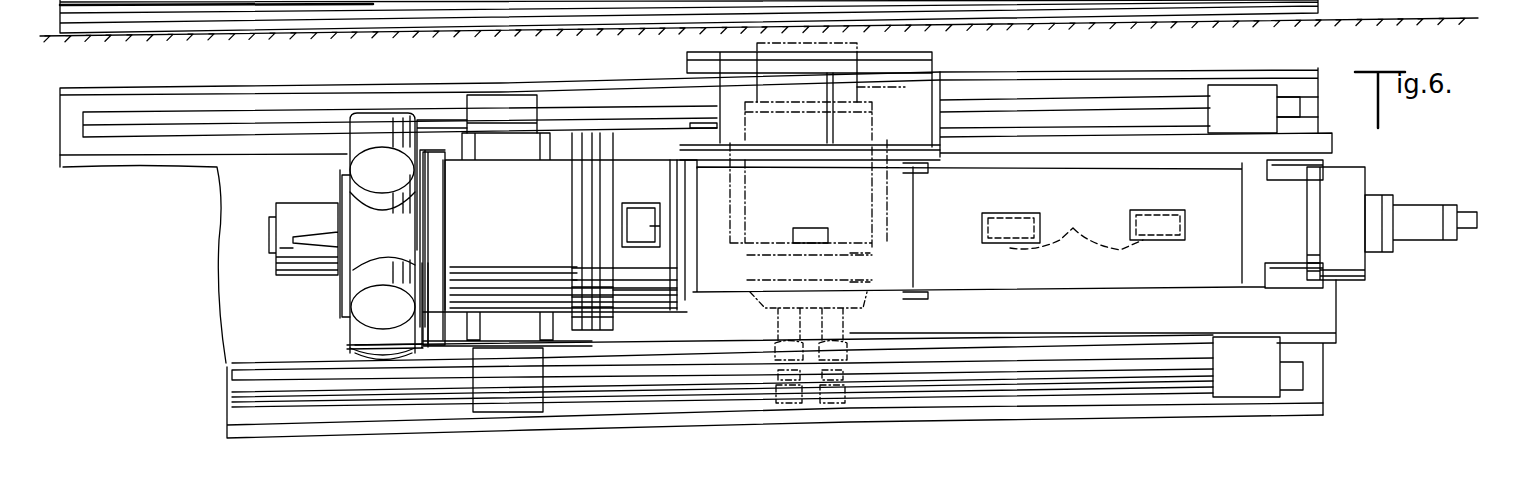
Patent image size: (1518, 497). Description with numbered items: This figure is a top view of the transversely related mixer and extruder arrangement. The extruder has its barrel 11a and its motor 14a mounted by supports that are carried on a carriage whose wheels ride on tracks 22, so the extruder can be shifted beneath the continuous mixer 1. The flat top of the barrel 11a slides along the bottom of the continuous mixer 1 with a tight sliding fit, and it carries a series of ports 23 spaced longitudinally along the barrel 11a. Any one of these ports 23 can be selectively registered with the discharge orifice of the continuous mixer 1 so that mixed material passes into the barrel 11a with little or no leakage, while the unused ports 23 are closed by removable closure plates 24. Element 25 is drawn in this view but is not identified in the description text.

The continuous mixer 1 is at (912, 97).
The barrel 11a is at (975, 281).
The motor 14a is at (537, 237).
The tracks 22 is at (1300, 113).
The ports 23 is at (1076, 224).
The removable closure plates 24 is at (1160, 210).
The switch element 25 is at (793, 236).